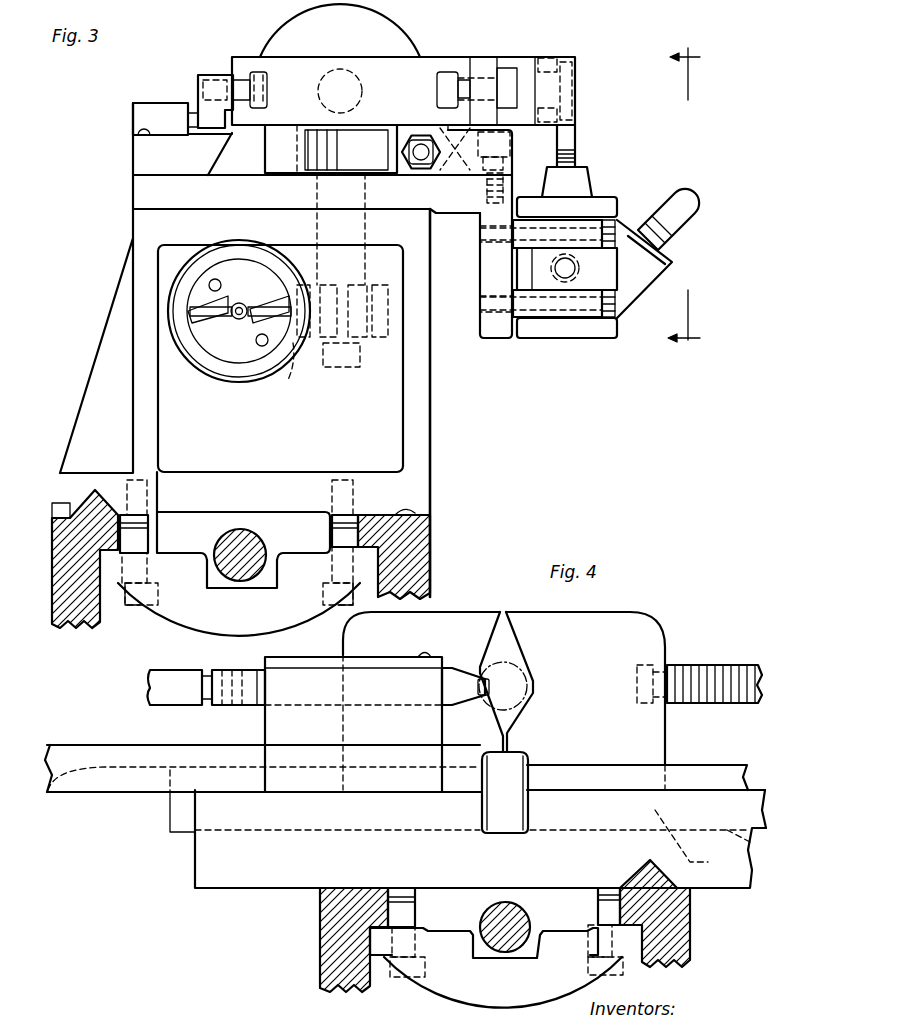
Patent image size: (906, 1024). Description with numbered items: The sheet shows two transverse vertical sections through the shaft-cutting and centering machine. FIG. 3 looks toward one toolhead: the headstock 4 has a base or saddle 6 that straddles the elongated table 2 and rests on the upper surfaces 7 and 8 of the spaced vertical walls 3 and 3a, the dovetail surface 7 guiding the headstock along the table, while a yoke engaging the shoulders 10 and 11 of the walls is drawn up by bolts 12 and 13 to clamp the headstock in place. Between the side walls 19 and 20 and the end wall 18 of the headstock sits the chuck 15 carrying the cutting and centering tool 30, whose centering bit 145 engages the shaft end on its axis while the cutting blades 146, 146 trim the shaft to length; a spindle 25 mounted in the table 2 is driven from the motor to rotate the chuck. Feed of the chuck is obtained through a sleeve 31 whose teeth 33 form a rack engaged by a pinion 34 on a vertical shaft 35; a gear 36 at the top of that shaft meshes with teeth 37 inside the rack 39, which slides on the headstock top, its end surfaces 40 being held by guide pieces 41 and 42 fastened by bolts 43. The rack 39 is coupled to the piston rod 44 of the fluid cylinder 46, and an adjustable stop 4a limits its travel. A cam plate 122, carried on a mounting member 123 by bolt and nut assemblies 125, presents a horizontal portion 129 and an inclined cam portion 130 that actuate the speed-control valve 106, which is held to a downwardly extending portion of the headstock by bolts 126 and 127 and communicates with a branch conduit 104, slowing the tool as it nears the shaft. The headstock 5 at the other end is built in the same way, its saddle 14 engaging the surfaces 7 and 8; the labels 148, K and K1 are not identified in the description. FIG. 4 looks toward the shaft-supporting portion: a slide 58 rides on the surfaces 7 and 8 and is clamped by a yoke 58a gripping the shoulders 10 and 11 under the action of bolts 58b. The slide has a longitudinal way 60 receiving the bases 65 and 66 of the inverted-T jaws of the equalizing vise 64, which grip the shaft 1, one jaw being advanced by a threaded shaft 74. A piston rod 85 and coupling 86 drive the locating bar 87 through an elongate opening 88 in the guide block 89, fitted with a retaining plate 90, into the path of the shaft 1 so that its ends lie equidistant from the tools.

In FIG. 4, the shaft 1 is at (508, 662).
In FIG. 3, the table 2 is at (440, 562).
In FIG. 4, the table 2 is at (308, 972).
In FIG. 3, the wall 3 is at (65, 605).
In FIG. 4, the wall 3 is at (680, 926).
In FIG. 3, the wall 3a is at (420, 586).
In FIG. 4, the wall 3a is at (323, 952).
In FIG. 3, the headstock 4 is at (108, 300).
In FIG. 3, the adjustable stop 4a is at (420, 148).
In FIG. 3, the headstock 5 is at (692, 199).
In FIG. 3, the base or saddle 6 is at (62, 485).
In FIG. 3, the upper surface 7 is at (52, 507).
In FIG. 4, the upper surface 7 is at (670, 878).
In FIG. 3, the upper surface 8 is at (407, 512).
In FIG. 4, the upper surface 8 is at (355, 888).
In FIG. 3, the shoulder 10 is at (123, 550).
In FIG. 4, the shoulder 10 is at (600, 910).
In FIG. 3, the shoulder 11 is at (380, 541).
In FIG. 4, the shoulder 11 is at (388, 917).
In FIG. 3, the bolt 12 is at (125, 604).
In FIG. 3, the bolt 13 is at (352, 602).
In FIG. 4, the base or saddle 14 is at (732, 873).
In FIG. 3, the chuck 15 is at (225, 267).
In FIG. 3, the end wall 18 is at (292, 444).
In FIG. 3, the side wall 19 is at (142, 415).
In FIG. 3, the side wall 20 is at (420, 401).
In FIG. 3, the spindle 25 is at (258, 541).
In FIG. 4, the spindle 25 is at (515, 911).
In FIG. 3, the cutting and centering tool 30 is at (242, 323).
In FIG. 3, the sleeve 31 is at (245, 373).
In FIG. 3, the teeth 33 is at (293, 371).
In FIG. 3, the pinion or gear 34 is at (387, 320).
In FIG. 3, the vertical shaft 35 is at (365, 227).
In FIG. 3, the gear 36 is at (312, 173).
In FIG. 3, the teeth 37 is at (295, 152).
In FIG. 3, the rack 39 is at (425, 62).
In FIG. 3, the exterior end surfaces 40 is at (212, 165).
In FIG. 3, the retaining or guide piece 41 is at (433, 154).
In FIG. 3, the retaining or guide piece 42 is at (140, 168).
In FIG. 3, the bolts 43 is at (487, 195).
In FIG. 3, the piston rod 44 is at (358, 89).
In FIG. 3, the cylinder 46 is at (391, 22).
In FIG. 4, the slide 58 is at (185, 868).
In FIG. 4, the yoke 58a is at (505, 986).
In FIG. 4, the bolts 58b is at (428, 955).
In FIG. 4, the longitudinal way 60 is at (750, 843).
In FIG. 4, the equalizing vise 64 is at (672, 619).
In FIG. 4, the base 65 is at (173, 815).
In FIG. 4, the base 66 is at (760, 813).
In FIG. 4, the threaded shaft 74 is at (737, 670).
In FIG. 4, the piston rod 85 is at (167, 677).
In FIG. 4, the coupling 86 is at (238, 675).
In FIG. 4, the locating bar 87 is at (476, 675).
In FIG. 4, the elongate opening 88 is at (275, 707).
In FIG. 4, the guide block 89 is at (430, 723).
In FIG. 4, the retaining plate 90 is at (332, 660).
In FIG. 3, the branch conduit 104 is at (579, 268).
In FIG. 3, the speed-control valve 106 is at (686, 196).
In FIG. 3, the cam plate 122 is at (573, 127).
In FIG. 3, the mounting member 123 is at (523, 60).
In FIG. 3, the bolt and nut assembly 125 is at (503, 70).
In FIG. 3, the bolt 126 is at (613, 303).
In FIG. 3, the bolt 127 is at (615, 226).
In FIG. 3, the horizontal portion 129 is at (578, 152).
In FIG. 3, the inclined cam portion 130 is at (579, 160).
In FIG. 3, the centering bit 145 is at (238, 317).
In FIG. 3, the cutting blades 146 is at (243, 304).
In FIG. 3, the switch block 148 is at (218, 74).
In FIG. 3, the contact K is at (160, 119).
In FIG. 3, the contact lead K1 is at (192, 113).